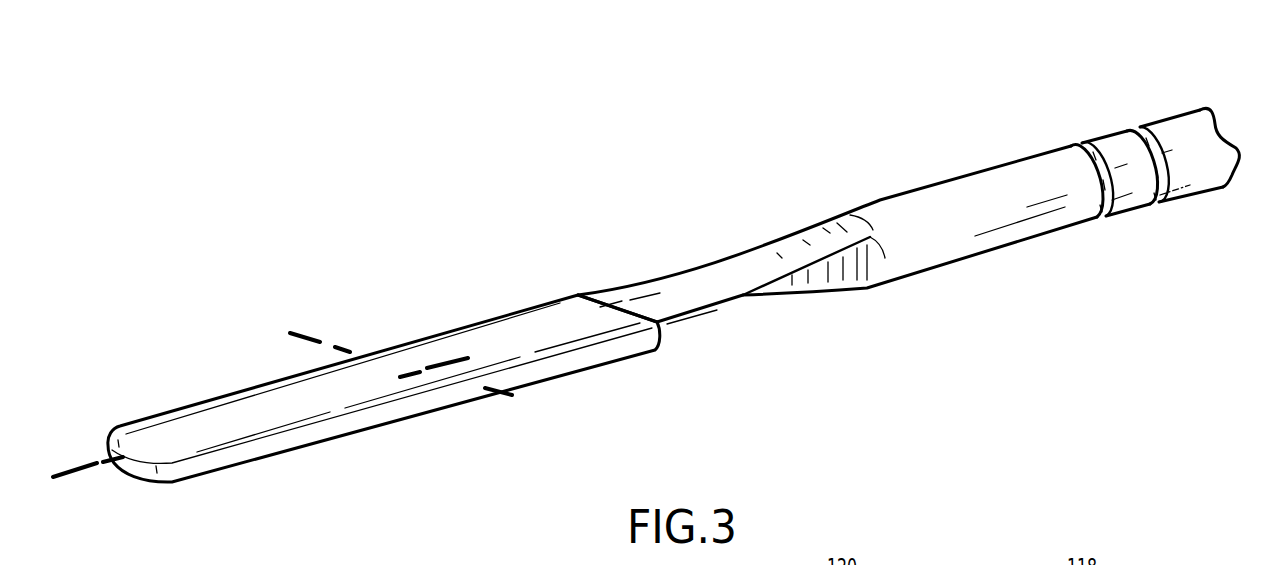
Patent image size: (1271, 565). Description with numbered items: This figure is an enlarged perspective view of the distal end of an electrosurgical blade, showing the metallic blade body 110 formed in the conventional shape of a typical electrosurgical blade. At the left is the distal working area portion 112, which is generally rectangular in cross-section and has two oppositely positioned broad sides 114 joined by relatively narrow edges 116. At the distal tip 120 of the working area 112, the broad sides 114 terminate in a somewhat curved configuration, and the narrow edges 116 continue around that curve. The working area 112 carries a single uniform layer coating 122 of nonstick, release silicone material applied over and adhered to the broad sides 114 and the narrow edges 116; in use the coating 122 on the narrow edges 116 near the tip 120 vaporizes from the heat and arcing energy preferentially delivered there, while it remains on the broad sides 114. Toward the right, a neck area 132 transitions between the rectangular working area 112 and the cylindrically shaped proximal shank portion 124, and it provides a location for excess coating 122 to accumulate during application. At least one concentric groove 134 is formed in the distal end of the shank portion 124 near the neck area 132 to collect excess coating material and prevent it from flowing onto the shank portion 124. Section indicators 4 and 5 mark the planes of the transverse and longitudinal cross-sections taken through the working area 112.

The blade body 110 is at (949, 170).
The working area portion 112 is at (512, 248).
The broad sides 114 is at (177, 433).
The narrow edges 116 is at (253, 455).
The tip 120 is at (138, 462).
The coating 122 is at (607, 296).
The shank portion 124 is at (1200, 183).
The neck area 132 is at (772, 247).
The concentric groove 134 is at (1130, 132).
The section line 4- 4 is at (503, 415).
The section line 5- 5 is at (412, 354).